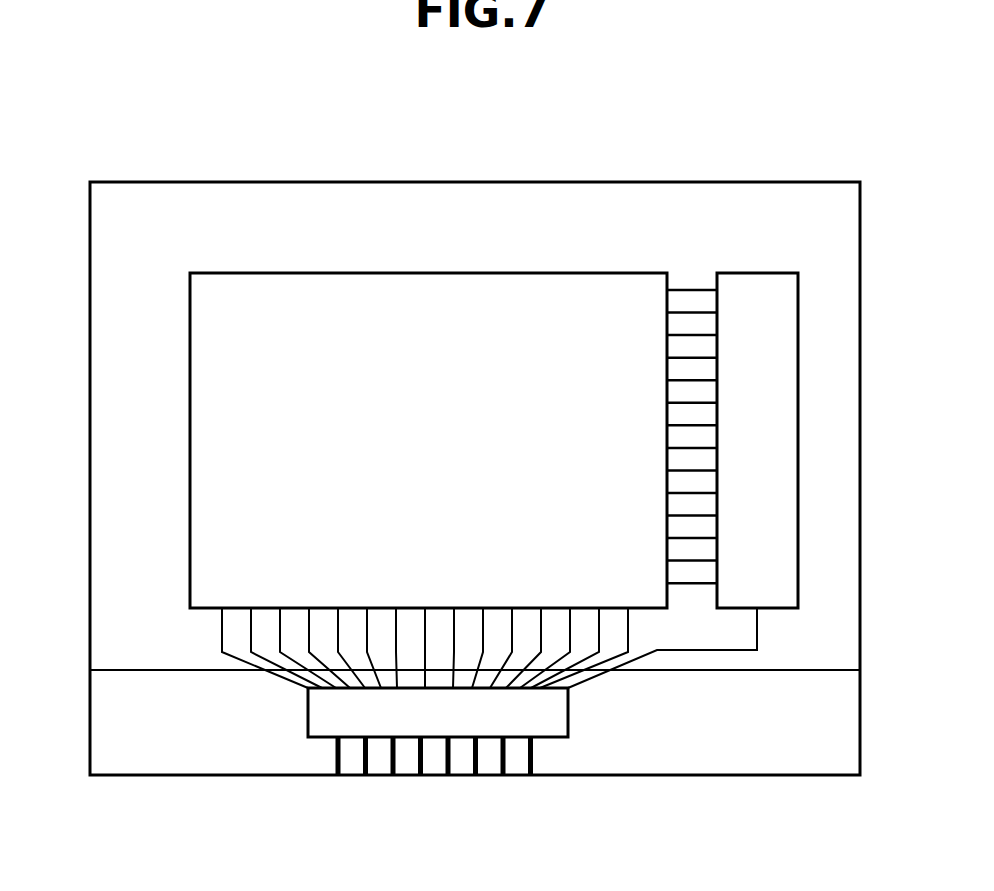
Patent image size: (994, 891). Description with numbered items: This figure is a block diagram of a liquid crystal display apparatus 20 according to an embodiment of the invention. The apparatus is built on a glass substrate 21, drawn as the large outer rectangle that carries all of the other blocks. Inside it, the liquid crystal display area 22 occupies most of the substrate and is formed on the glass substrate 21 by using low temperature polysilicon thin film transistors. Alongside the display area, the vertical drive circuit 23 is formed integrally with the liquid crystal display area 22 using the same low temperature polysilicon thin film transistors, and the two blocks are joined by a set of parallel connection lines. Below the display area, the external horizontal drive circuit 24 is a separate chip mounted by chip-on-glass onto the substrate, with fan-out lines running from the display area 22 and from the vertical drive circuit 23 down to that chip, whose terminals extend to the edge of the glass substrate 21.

The liquid crystal display apparatus 20 is at (400, 113).
The glass substrate 21 is at (553, 181).
The liquid crystal display area 22 is at (190, 396).
The vertical drive circuit 23 is at (800, 452).
The external horizontal drive circuit 24 is at (330, 738).